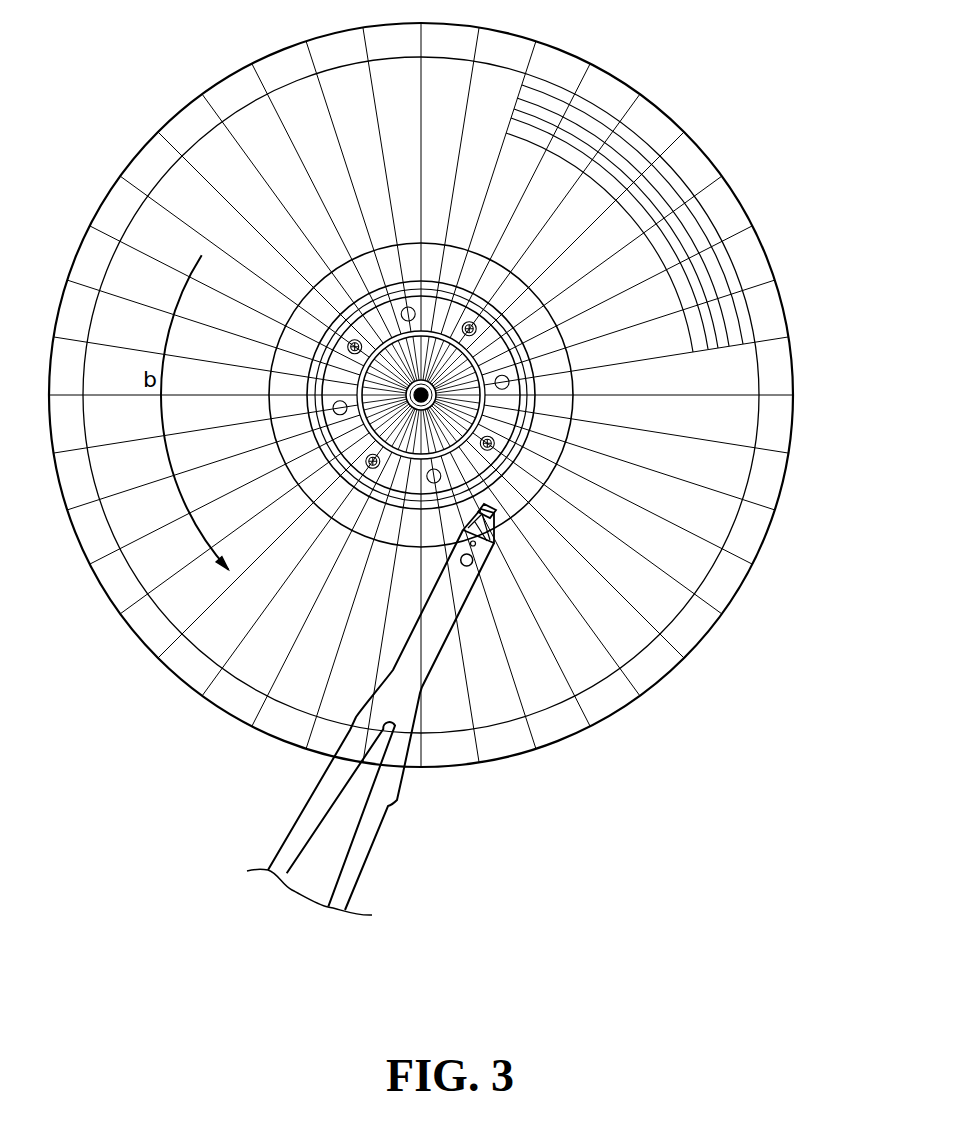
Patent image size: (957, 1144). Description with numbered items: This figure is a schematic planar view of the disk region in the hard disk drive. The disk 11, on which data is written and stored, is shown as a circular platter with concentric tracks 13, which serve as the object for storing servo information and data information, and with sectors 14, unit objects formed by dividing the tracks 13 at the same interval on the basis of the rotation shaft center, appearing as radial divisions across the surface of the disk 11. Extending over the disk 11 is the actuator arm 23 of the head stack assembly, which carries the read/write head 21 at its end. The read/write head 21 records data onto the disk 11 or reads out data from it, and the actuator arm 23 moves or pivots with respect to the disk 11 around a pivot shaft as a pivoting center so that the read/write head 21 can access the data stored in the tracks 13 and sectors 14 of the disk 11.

The disk 11 is at (657, 662).
The tracks 13 is at (707, 153).
The sectors 14 is at (734, 470).
The read/write head 21 is at (510, 518).
The actuator arm 23 is at (363, 835).